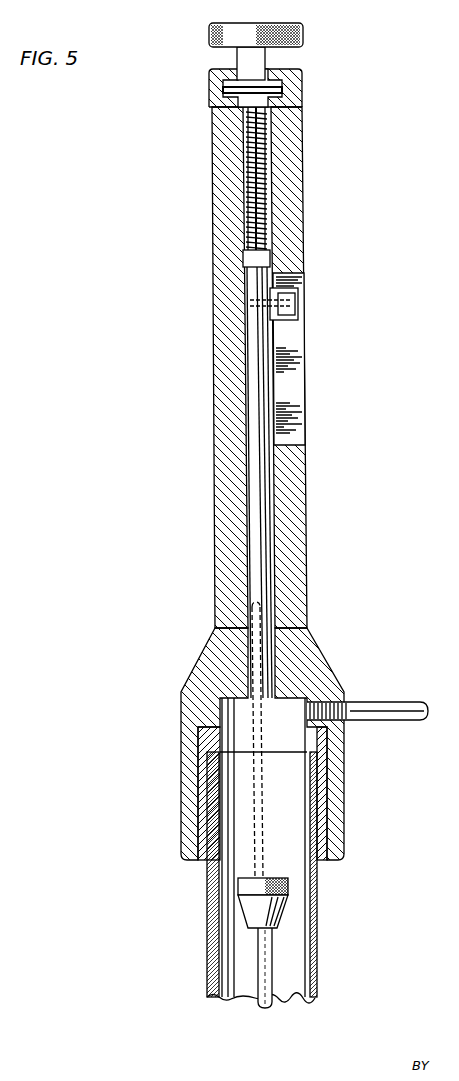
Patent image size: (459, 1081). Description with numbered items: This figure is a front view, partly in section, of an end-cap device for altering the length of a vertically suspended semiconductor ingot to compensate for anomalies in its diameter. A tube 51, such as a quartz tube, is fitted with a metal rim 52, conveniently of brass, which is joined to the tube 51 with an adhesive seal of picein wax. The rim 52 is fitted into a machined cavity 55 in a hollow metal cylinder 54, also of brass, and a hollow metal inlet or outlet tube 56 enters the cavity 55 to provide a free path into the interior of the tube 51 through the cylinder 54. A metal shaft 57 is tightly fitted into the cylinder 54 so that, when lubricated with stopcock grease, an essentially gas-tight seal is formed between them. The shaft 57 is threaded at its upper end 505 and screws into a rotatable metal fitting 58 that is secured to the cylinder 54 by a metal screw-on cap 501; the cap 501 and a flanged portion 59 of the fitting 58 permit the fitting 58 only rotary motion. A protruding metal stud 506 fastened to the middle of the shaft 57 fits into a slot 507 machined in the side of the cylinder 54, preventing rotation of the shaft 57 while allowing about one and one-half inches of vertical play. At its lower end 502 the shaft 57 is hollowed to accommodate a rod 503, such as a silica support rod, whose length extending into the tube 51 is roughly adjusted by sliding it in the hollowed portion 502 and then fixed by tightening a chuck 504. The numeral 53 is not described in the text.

The tube 51 is at (317, 957).
The metal rim 52 is at (200, 742).
The inner tube 53 is at (208, 842).
The hollow metal cylinder 54 is at (222, 475).
The machined cavity 55 is at (232, 712).
The hollow metal inlet or outlet tube 56 is at (387, 703).
The metal shaft 57 is at (263, 517).
The rotatable metal fitting 58 is at (303, 31).
The flanged portion 59 is at (283, 91).
The metal screw-on cap 501 is at (209, 82).
The lower end of the shaft 502 is at (293, 613).
The rod 503 is at (262, 1003).
The chuck 504 is at (280, 918).
The upper end of the shaft 505 is at (252, 183).
The protruding metal stud 506 is at (292, 294).
The slot 507 is at (300, 385).